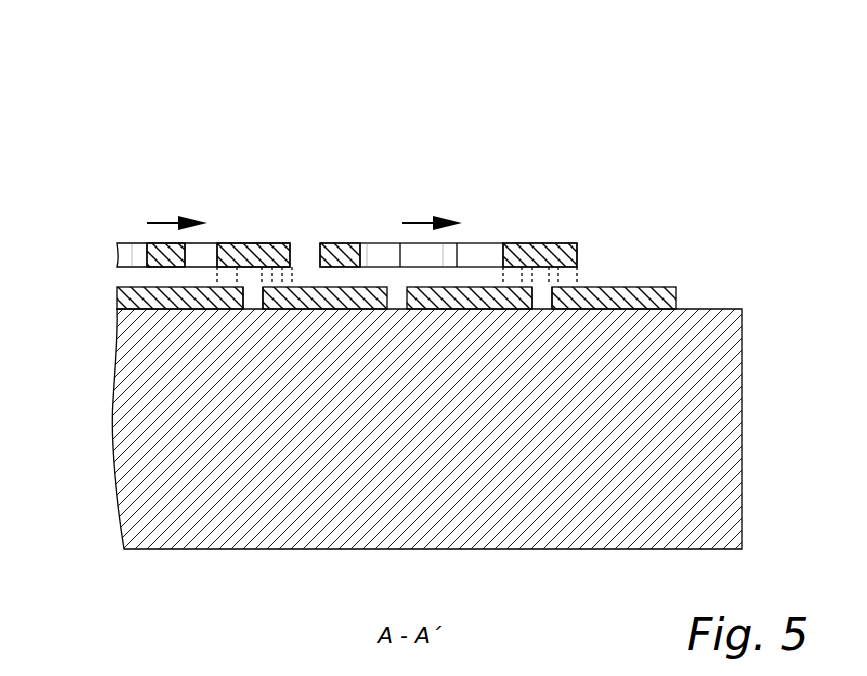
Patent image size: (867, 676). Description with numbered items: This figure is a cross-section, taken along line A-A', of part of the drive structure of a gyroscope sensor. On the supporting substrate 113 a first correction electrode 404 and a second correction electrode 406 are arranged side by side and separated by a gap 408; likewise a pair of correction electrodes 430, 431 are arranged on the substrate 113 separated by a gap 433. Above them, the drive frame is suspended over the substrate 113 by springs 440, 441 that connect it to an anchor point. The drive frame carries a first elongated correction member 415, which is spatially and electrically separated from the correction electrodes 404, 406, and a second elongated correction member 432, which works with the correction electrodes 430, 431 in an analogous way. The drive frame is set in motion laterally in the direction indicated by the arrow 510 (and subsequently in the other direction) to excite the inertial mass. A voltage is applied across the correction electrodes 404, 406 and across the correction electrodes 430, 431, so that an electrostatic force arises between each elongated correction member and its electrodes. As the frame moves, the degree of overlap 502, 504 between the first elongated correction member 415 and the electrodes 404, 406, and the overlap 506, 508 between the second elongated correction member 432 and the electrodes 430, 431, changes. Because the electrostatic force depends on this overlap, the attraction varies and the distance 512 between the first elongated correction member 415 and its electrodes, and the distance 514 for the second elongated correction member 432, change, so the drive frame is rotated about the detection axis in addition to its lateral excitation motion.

The substrate 113 is at (713, 330).
The first correction electrode 404 is at (331, 297).
The second correction electrode 406 is at (189, 295).
The gap 408 is at (252, 305).
The second correction electrode of second elongated correction member 430 is at (625, 297).
The first correction electrode of second elongated correction member 431 is at (479, 297).
The gap 433 is at (546, 300).
The first elongated correction member 415 is at (243, 279).
The second elongated correction member 432 is at (549, 270).
The spring 440 is at (342, 255).
The spring 441 is at (155, 253).
The overlap 502 is at (229, 281).
The overlap 504 is at (291, 250).
The overlap 506 is at (513, 250).
The overlap 508 is at (562, 277).
The arrow 510 is at (158, 219).
The distance 512 is at (266, 281).
The distance 514 is at (531, 280).